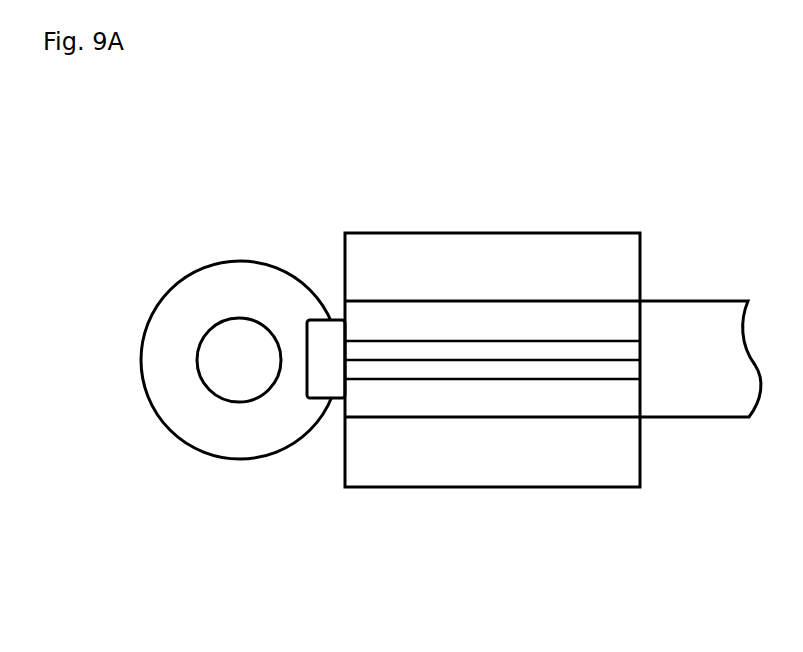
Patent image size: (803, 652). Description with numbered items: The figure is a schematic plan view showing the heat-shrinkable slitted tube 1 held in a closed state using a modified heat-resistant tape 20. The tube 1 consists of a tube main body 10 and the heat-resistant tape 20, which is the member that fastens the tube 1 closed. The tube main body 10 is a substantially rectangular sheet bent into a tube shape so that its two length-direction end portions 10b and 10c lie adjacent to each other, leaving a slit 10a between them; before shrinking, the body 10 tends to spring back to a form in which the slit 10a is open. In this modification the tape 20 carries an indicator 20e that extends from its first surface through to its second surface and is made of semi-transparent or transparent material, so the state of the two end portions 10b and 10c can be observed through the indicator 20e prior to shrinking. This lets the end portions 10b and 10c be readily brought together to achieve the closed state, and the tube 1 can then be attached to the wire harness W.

The heat-shrinkable slitted tube 1 is at (527, 323).
The tube main body 10 is at (592, 243).
The slit 10a is at (610, 362).
The end portion 10b is at (373, 370).
The end portion 10c is at (373, 352).
The heat-resistant tape 20 is at (527, 366).
The indicator 20e is at (622, 347).
The wire harness W is at (171, 488).